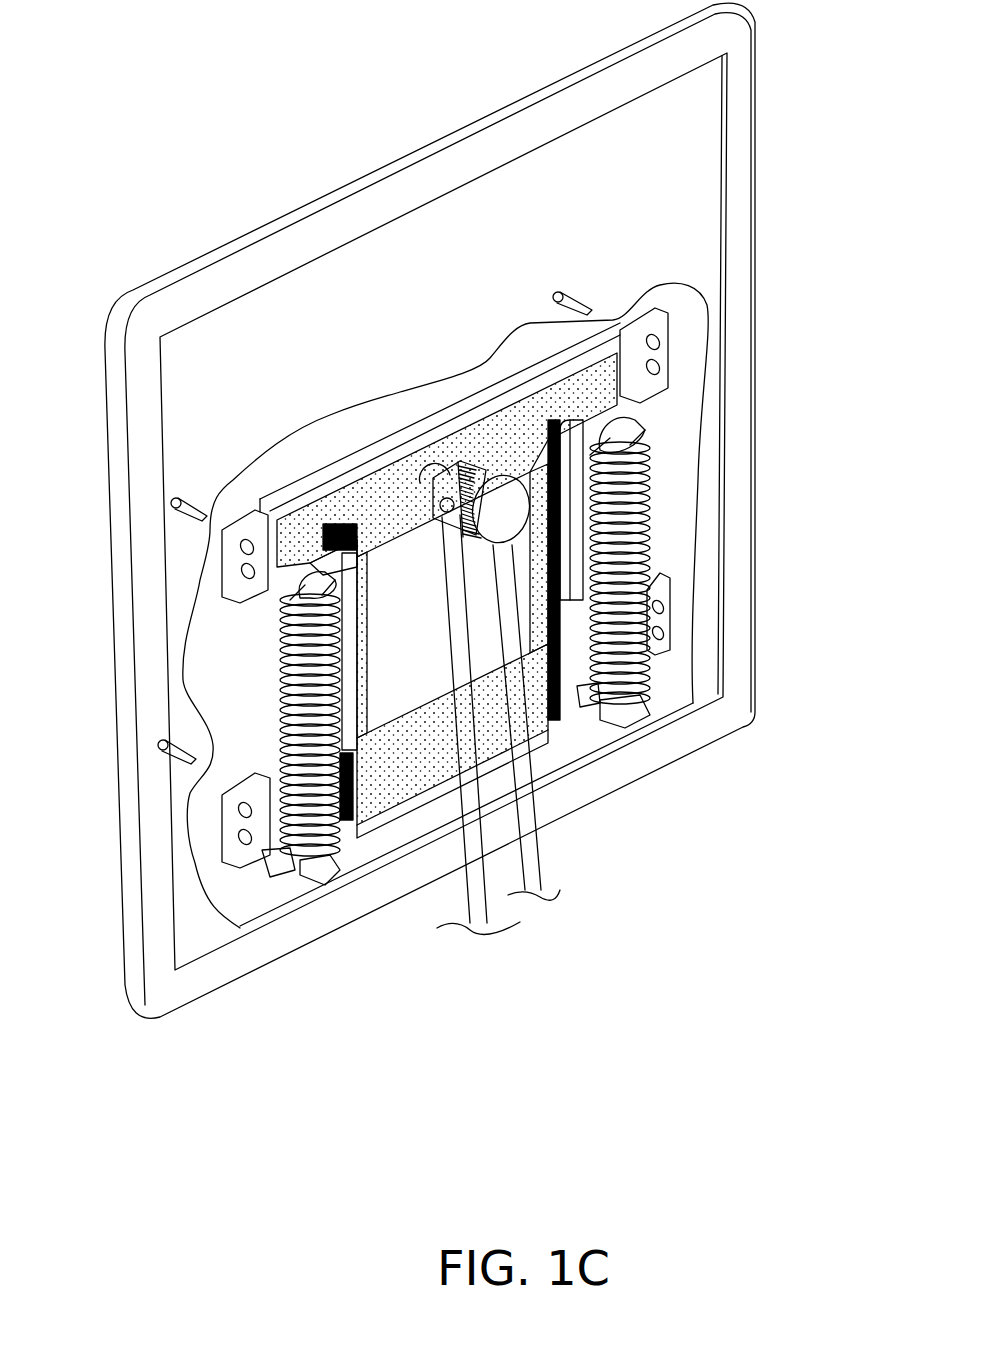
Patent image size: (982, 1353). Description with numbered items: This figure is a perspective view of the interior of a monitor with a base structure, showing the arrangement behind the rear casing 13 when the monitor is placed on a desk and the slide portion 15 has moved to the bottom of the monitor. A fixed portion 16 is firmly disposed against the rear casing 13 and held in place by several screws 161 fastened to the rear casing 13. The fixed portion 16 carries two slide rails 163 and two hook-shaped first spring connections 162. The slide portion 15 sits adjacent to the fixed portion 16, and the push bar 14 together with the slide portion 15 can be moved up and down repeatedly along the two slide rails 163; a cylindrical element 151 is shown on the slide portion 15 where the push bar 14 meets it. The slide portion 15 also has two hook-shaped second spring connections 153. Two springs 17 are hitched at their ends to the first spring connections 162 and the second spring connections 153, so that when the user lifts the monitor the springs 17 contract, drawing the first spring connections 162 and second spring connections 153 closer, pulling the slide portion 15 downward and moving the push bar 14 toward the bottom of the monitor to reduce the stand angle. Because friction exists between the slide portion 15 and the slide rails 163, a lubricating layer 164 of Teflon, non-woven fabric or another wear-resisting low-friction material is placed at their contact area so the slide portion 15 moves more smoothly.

The rear casing 13 is at (665, 150).
The push bar 14 is at (450, 572).
The slide portion 15 is at (367, 505).
The pivot knob 151 is at (497, 505).
The second spring connection 153 is at (648, 420).
The fixed portion 16 is at (503, 390).
The screw 161 is at (556, 290).
The first spring connection 162 is at (633, 715).
The slide rail 163 is at (568, 548).
The lubricating layer 164 is at (547, 703).
The spring 17 is at (648, 493).